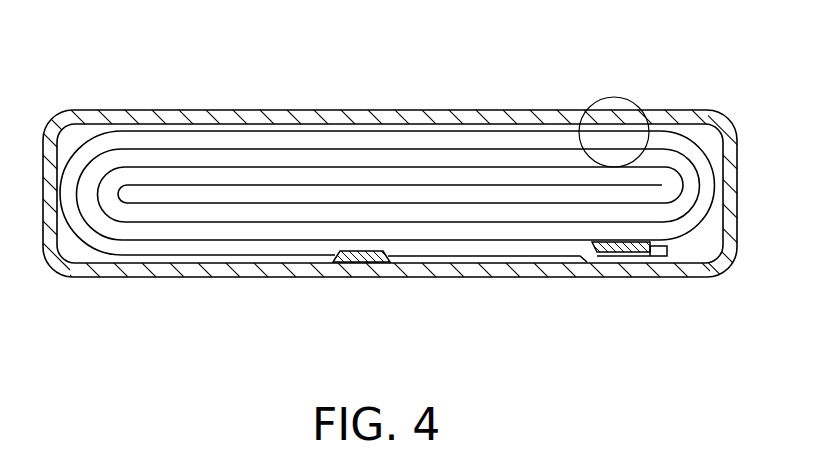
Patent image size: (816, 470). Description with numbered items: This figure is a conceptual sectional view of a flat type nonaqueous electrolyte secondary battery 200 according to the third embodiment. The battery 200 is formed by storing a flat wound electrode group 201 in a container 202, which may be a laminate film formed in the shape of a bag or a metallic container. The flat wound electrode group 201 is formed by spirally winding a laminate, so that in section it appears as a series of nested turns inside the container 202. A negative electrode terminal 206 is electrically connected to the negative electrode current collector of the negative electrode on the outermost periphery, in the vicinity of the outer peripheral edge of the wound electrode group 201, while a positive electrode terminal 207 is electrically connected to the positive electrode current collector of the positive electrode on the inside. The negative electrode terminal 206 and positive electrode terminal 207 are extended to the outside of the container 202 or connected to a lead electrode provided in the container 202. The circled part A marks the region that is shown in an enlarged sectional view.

The nonaqueous electrolyte secondary battery 200 is at (92, 42).
The flat wound electrode group 201 is at (205, 137).
The container 202 is at (410, 118).
The negative electrode terminal 206 is at (368, 258).
The positive electrode terminal 207 is at (626, 253).
The part A is at (613, 97).